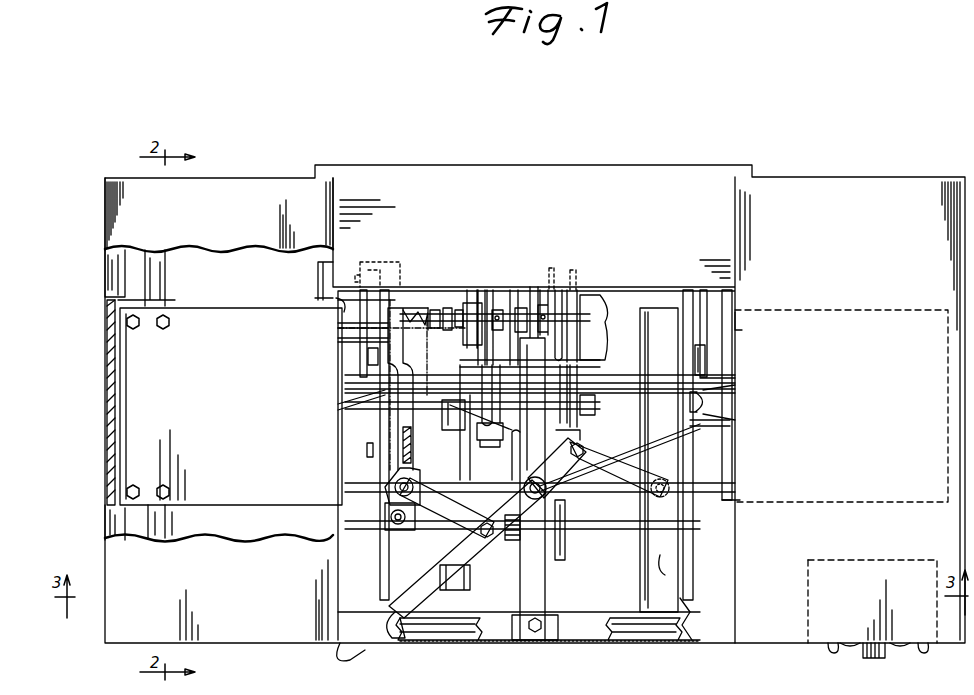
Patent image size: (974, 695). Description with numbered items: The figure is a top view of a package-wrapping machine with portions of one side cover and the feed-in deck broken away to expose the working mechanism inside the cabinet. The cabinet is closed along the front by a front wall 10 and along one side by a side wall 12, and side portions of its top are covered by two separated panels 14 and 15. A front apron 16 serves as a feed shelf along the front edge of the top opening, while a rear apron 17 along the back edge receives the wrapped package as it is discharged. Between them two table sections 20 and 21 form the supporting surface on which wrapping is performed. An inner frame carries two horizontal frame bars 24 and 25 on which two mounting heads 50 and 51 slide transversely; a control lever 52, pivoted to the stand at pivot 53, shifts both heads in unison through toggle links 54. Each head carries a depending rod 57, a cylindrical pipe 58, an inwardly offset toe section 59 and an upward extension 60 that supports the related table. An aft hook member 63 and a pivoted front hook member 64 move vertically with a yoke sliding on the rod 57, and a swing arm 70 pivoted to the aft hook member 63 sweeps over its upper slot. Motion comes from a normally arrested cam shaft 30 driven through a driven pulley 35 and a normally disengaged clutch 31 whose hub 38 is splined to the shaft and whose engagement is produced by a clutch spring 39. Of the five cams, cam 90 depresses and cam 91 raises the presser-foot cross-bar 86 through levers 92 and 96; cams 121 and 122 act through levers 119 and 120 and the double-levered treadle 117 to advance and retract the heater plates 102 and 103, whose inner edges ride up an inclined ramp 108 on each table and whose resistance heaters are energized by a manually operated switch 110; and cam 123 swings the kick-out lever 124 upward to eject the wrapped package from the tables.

The front wall 10 is at (576, 640).
The side wall 12 is at (110, 429).
The top panel 14 is at (238, 186).
The top panel 15 is at (845, 192).
The front apron 16 is at (352, 598).
The rear apron 17 is at (708, 180).
The table section 20 is at (413, 308).
The table section 21 is at (656, 310).
The horizontal frame bar 24 is at (710, 484).
The horizontal frame bar 25 is at (620, 378).
The cam shaft 30 is at (605, 318).
The clutch 31 is at (334, 312).
The driven pulley 35 is at (318, 280).
The clutch hub 38 is at (460, 576).
The clutch spring 39 is at (420, 312).
The mounting head 50 is at (414, 378).
The mounting head 51 is at (705, 402).
The control lever 52 is at (472, 548).
The lever pivot 53 is at (547, 495).
The toggle links 54 is at (466, 520).
The rod 57 is at (372, 408).
The cylindrical pipe 58 is at (388, 522).
The toe section 59 is at (378, 262).
The upward extension 60 is at (413, 448).
The aft hook member 63 is at (385, 507).
The front hook member 64 is at (378, 557).
The swing arm 70 is at (706, 362).
The cross-bar 86 is at (620, 530).
The cam 90 is at (573, 272).
The cam 91 is at (511, 300).
The lever 92 is at (565, 548).
The lever 96 is at (512, 530).
The heater plate 102 is at (237, 316).
The heater plate 103 is at (725, 348).
The inclined ramp 108 is at (662, 564).
The manually operated switch 110 is at (922, 652).
The double-levered treadle 117 is at (580, 432).
The cam-operated lever 119 is at (478, 445).
The cam-operated lever 120 is at (590, 404).
The cam 121 is at (490, 302).
The cam 122 is at (583, 312).
The cam 123 is at (549, 272).
The kick-out lever 124 is at (535, 372).